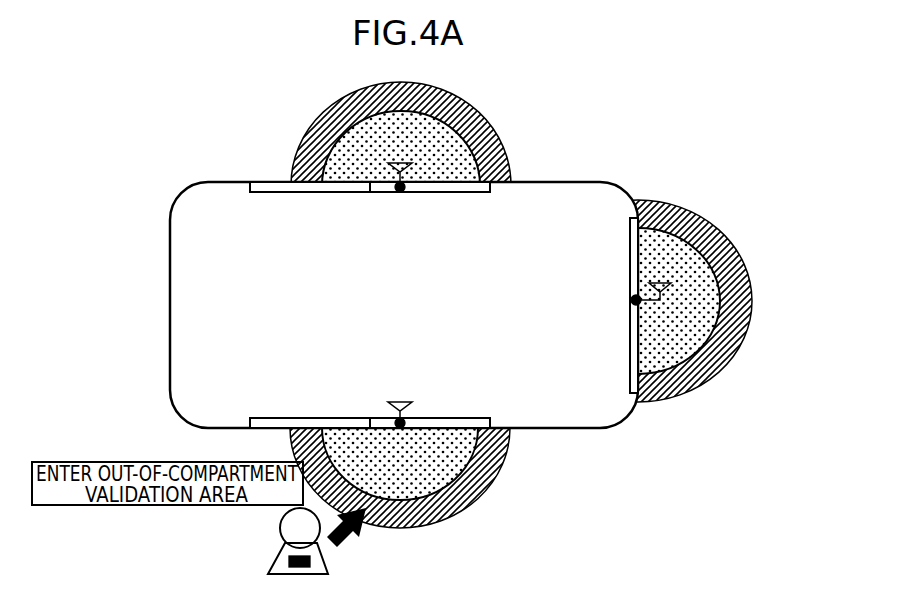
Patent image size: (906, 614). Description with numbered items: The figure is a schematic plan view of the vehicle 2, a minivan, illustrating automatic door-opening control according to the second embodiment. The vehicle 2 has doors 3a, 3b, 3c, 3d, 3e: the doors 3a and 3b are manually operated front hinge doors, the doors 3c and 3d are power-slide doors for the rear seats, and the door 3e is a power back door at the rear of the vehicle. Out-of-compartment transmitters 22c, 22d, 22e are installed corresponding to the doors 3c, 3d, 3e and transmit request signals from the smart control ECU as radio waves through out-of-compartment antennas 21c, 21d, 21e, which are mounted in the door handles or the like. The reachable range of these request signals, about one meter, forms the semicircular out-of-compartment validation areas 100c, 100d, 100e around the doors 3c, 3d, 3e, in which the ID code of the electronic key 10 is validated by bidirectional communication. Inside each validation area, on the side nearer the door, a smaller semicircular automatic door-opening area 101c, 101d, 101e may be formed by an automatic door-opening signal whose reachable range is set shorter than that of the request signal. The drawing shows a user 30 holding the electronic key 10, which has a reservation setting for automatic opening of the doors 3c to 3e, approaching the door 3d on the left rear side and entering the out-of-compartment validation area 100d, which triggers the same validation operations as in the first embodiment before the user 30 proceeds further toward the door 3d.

The vehicle 2 is at (222, 181).
The door 3a is at (272, 181).
The door 3b is at (272, 418).
The door 3c is at (463, 181).
The door 3d is at (462, 418).
The door 3e is at (630, 338).
The out-of-compartment antenna 21c is at (398, 162).
The out-of-compartment antenna 21d is at (398, 401).
The out-of-compartment antenna 21e is at (665, 286).
The out-of-compartment transmitter 22c is at (396, 183).
The out-of-compartment transmitter 22d is at (396, 420).
The out-of-compartment transmitter 22e is at (633, 303).
The out-of-compartment validation area 100c is at (481, 108).
The out-of-compartment validation area 100d is at (493, 490).
The out-of-compartment validation area 100e is at (693, 212).
The automatic door-opening area 101c is at (466, 139).
The automatic door-opening area 101d is at (435, 498).
The automatic door-opening area 101e is at (698, 243).
The user 30 is at (282, 555).
The electronic key 10 is at (306, 567).